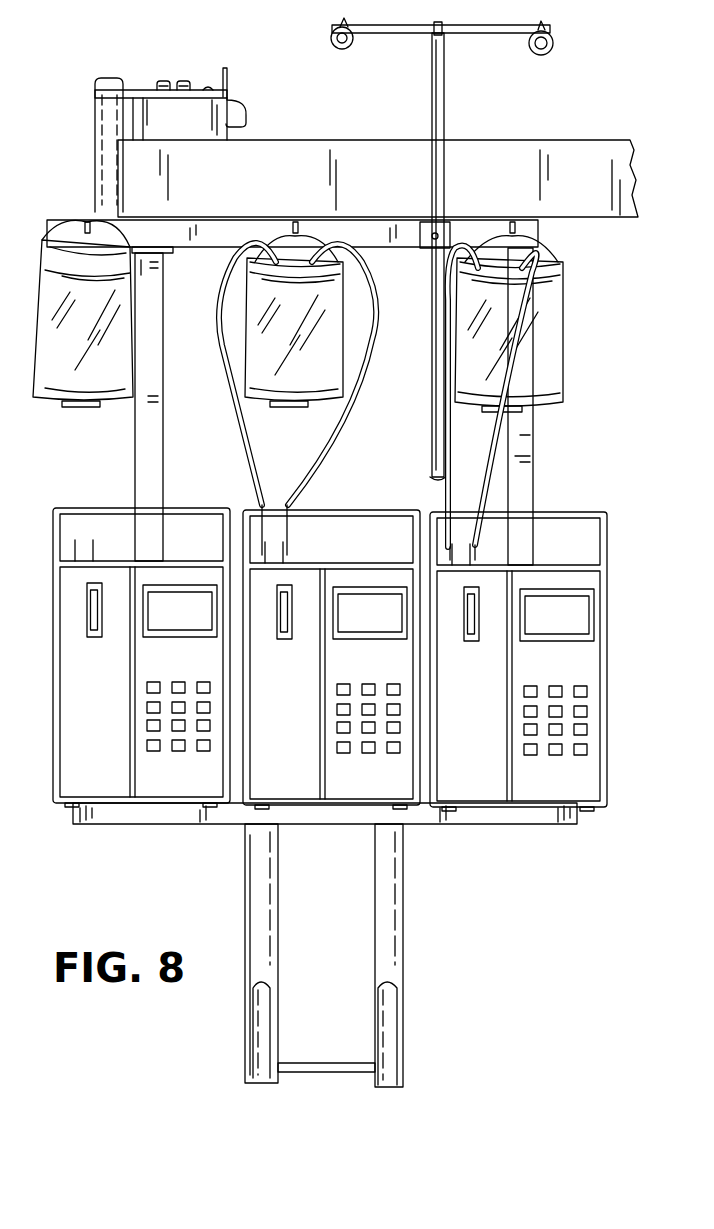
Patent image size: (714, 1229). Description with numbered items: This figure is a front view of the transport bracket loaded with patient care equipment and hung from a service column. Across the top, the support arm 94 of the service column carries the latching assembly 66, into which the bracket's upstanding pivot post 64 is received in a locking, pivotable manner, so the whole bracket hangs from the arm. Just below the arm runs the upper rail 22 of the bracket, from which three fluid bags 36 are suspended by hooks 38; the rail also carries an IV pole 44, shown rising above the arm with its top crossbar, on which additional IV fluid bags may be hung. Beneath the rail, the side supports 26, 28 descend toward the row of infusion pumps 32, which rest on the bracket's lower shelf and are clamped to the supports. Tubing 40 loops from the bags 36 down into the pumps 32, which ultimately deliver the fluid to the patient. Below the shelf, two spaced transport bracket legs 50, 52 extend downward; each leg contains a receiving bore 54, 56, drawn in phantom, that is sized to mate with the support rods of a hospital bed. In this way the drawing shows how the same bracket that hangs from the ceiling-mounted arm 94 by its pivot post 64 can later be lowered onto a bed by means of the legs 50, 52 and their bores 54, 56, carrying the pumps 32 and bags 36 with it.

The upper rail 22 is at (410, 232).
The side support 26 is at (150, 475).
The side support 28 is at (528, 476).
The infusion pump 32 is at (107, 783).
The fluid bag 36 is at (118, 327).
The hook 38 is at (85, 222).
The tubing 40 is at (313, 460).
The IV pole 44 is at (445, 92).
The transport bracket leg 50 is at (270, 896).
The transport bracket leg 52 is at (400, 900).
The receiving bore 54 is at (270, 1008).
The receiving bore 56 is at (395, 1010).
The pivot post 64 is at (113, 78).
The latching assembly 66 is at (186, 72).
The support arm 94 is at (540, 140).